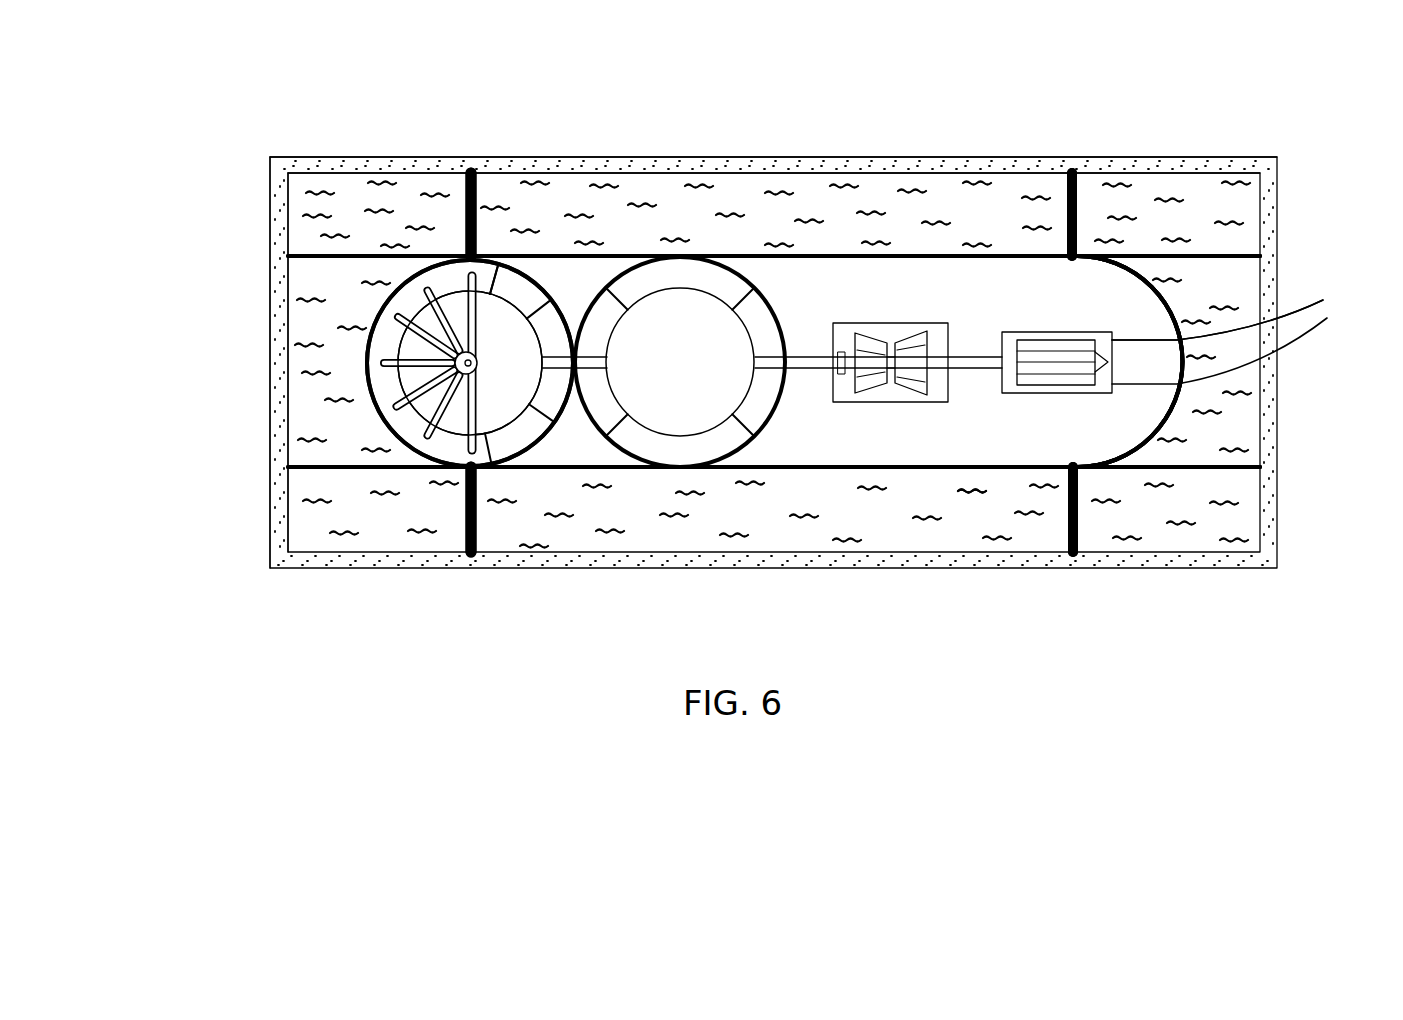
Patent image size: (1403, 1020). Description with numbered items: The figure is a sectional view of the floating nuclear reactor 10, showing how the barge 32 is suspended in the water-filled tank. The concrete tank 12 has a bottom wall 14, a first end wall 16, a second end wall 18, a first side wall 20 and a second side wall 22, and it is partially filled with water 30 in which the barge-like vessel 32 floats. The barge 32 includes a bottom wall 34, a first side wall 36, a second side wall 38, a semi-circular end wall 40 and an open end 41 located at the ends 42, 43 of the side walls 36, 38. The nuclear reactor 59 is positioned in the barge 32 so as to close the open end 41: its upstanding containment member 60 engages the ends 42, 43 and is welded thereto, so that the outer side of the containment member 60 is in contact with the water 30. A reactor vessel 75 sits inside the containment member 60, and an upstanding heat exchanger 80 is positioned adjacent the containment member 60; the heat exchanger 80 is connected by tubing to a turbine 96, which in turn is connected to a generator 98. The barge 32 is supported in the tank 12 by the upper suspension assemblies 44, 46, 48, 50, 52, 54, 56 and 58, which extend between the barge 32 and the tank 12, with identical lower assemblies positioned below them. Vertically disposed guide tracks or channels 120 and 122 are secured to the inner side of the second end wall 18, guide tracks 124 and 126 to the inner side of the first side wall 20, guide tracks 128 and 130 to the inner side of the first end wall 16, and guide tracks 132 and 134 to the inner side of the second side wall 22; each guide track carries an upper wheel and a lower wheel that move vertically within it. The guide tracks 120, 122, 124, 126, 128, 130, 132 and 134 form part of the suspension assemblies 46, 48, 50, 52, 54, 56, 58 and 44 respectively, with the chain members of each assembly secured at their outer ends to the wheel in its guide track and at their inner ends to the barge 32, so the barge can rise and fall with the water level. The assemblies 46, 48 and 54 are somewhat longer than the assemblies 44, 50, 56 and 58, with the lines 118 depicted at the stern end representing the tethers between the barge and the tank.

The floating nuclear reactor 10 is at (814, 278).
The concrete tank 12 is at (1229, 157).
The bottom wall 14 is at (869, 528).
The first end wall 16 is at (270, 413).
The second end wall 18 is at (1283, 287).
The first side wall 20 is at (745, 570).
The second side wall 22 is at (720, 158).
The water 30 is at (938, 526).
The barge-like vessel 32 is at (1180, 408).
The bottom wall 34 is at (1007, 451).
The first side wall 36 is at (990, 473).
The second side wall 38 is at (1010, 257).
The semi-circular end wall 40 is at (1170, 302).
The open end 41 is at (548, 462).
The end of first side wall 42 is at (488, 462).
The end of second side wall 43 is at (482, 258).
The upper suspension assembly 44 is at (1082, 203).
The upper suspension assembly 46 is at (1219, 248).
The upper suspension assembly 48 is at (1244, 484).
The upper suspension assembly 50 is at (1081, 514).
The upper suspension assembly 52 is at (462, 528).
The upper suspension assembly 54 is at (320, 469).
The upper suspension assembly 56 is at (320, 268).
The upper suspension assembly 58 is at (462, 190).
The nuclear reactor 59 is at (384, 346).
The containment member 60 is at (390, 275).
The reactor vessel 75 is at (577, 425).
The heat exchanger 80 is at (742, 442).
The turbine 96 is at (910, 407).
The generator 98 is at (1095, 396).
The tethers 118 is at (1290, 343).
The guide track 120 is at (1257, 243).
The guide track 122 is at (1229, 475).
The guide track 124 is at (1072, 552).
The guide track 126 is at (492, 565).
The guide track 128 is at (298, 468).
The guide track 130 is at (298, 255).
The guide track 132 is at (478, 178).
The guide track 134 is at (1068, 177).